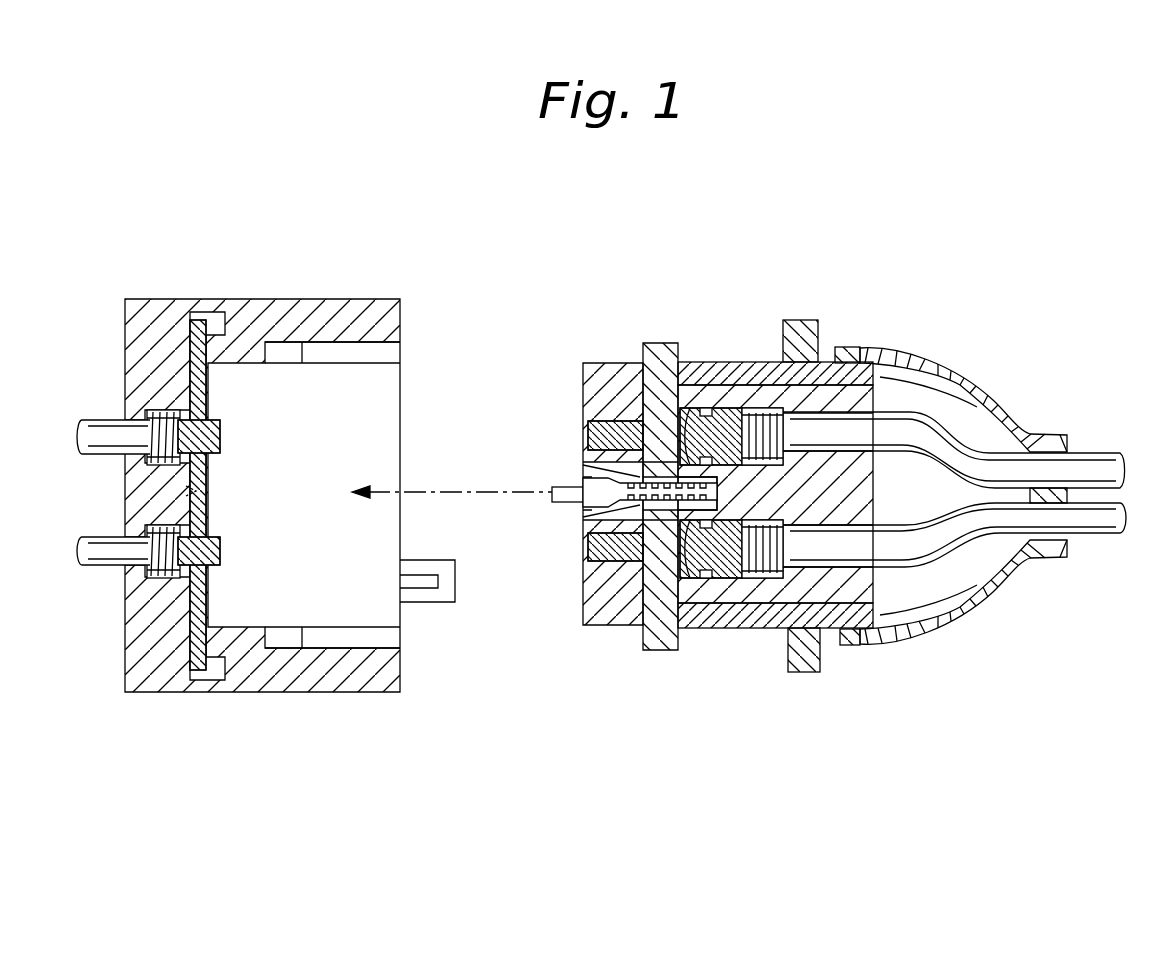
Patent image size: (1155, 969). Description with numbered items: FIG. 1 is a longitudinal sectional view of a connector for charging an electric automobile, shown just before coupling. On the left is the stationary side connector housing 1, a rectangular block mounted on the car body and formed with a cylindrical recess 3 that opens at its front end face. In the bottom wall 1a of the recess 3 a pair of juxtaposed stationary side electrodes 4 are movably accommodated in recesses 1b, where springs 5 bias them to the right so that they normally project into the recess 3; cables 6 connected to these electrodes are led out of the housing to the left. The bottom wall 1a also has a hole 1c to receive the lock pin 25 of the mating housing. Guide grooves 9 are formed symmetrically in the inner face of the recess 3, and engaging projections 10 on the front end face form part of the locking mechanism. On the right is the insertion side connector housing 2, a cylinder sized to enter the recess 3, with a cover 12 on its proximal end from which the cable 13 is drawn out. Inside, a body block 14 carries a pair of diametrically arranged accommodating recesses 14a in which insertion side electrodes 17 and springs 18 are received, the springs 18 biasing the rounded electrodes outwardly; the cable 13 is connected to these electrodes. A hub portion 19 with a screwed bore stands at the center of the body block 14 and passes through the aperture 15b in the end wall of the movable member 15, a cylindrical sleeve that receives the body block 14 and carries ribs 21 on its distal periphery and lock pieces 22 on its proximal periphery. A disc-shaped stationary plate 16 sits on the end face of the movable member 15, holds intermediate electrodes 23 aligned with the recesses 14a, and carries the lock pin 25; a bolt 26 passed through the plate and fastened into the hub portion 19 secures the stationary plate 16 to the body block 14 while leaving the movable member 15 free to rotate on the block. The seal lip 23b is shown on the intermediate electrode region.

The stationary side connector housing 1 is at (203, 292).
The bottom wall 1a is at (208, 470).
The recesses 1b is at (152, 412).
The hole 1c is at (208, 492).
The insertion side connector housing 2 is at (840, 303).
The cylindrical recess 3 is at (388, 415).
The stationary side electrodes 4 is at (222, 428).
The springs 5 is at (150, 545).
The cables 6 is at (102, 423).
The guide grooves 9 is at (383, 358).
The engaging projections 10 is at (440, 604).
The cover 12 is at (953, 365).
The cable 13 is at (1087, 453).
The body block 14 is at (740, 603).
The accommodating recesses 14a is at (862, 346).
The movable member 15 is at (695, 362).
The aperture 15b is at (645, 463).
The stationary plate 16 is at (600, 626).
The insertion side electrodes 17 is at (733, 408).
The springs 18 is at (875, 490).
The hub portion 19 is at (582, 540).
The ribs 21 is at (655, 343).
The lock pieces 22 is at (798, 320).
The intermediate electrodes 23 is at (585, 424).
The seal lip 23b is at (585, 503).
The lock pin 25 is at (556, 487).
The bolt 26 is at (592, 528).